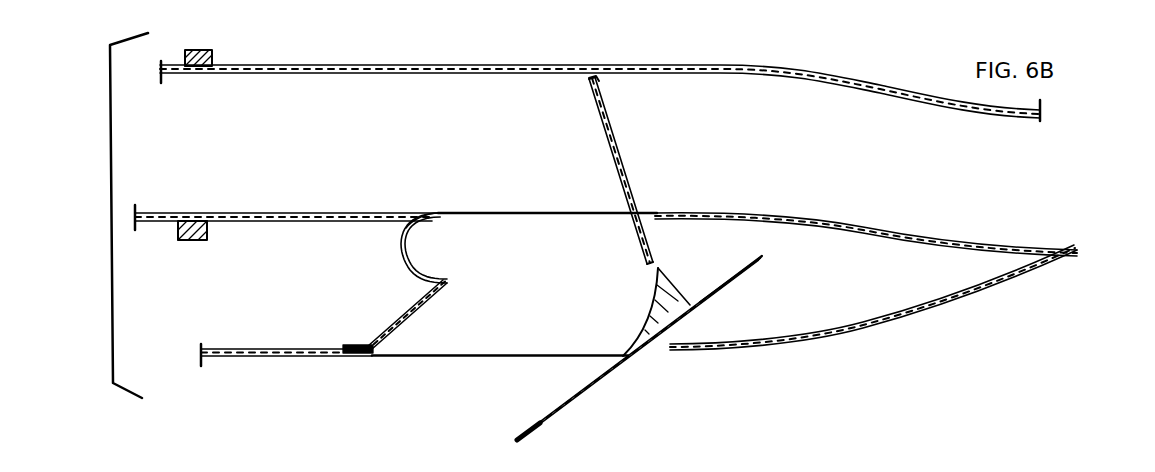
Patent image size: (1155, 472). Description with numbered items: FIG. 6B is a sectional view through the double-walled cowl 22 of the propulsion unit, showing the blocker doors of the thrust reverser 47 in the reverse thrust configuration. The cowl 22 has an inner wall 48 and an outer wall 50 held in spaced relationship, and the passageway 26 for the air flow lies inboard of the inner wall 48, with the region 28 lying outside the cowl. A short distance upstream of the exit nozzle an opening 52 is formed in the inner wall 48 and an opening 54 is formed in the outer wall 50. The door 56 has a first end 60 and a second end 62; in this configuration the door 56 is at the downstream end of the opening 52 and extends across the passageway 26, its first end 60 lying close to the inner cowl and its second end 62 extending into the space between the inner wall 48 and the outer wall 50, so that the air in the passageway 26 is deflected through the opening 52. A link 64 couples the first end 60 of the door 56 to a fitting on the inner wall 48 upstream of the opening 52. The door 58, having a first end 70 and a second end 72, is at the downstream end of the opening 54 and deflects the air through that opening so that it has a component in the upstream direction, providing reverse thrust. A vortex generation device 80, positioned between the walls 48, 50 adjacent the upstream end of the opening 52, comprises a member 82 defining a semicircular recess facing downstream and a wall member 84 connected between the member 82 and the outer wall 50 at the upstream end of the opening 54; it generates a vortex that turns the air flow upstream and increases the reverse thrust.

The double-walled cowl 22 is at (957, 313).
The passageway 26 is at (367, 141).
The exhaust flow region 28 is at (1030, 175).
The thrust reverser 47 is at (690, 150).
The inner wall 48 is at (293, 212).
The outer wall 50 is at (282, 359).
The opening 52 is at (531, 212).
The opening 54 is at (433, 360).
The door 56 is at (614, 129).
The door 58 is at (618, 375).
The first end of door 56 60 is at (598, 82).
The second end of door 56 62 is at (640, 234).
The link 64 is at (500, 148).
The first end of door 58 70 is at (550, 421).
The second end of door 58 72 is at (737, 283).
The vortex generation device 80 is at (399, 261).
The member 82 is at (405, 226).
The wall member 84 is at (410, 310).